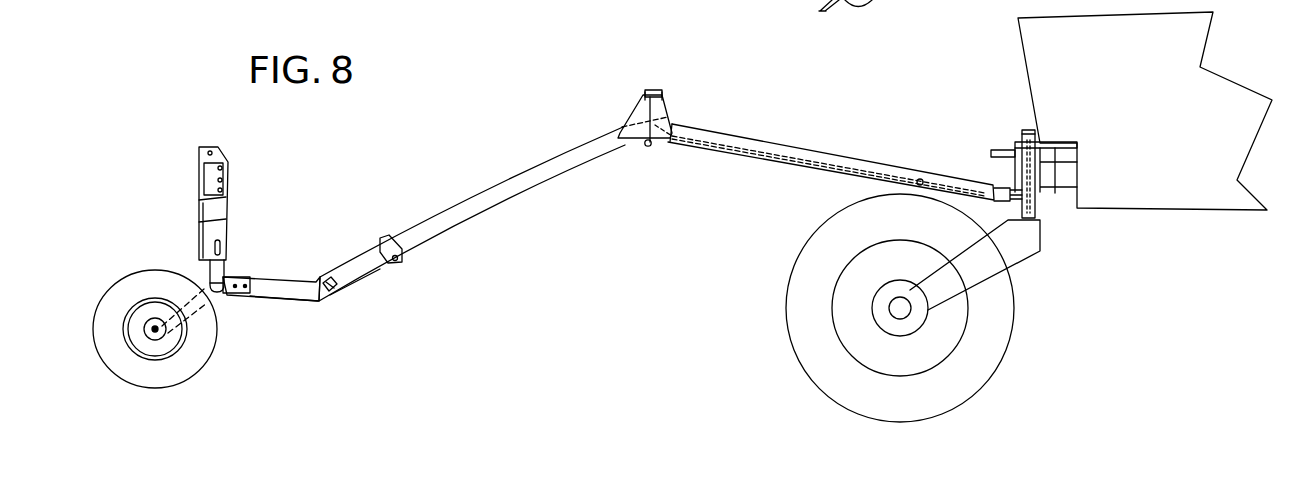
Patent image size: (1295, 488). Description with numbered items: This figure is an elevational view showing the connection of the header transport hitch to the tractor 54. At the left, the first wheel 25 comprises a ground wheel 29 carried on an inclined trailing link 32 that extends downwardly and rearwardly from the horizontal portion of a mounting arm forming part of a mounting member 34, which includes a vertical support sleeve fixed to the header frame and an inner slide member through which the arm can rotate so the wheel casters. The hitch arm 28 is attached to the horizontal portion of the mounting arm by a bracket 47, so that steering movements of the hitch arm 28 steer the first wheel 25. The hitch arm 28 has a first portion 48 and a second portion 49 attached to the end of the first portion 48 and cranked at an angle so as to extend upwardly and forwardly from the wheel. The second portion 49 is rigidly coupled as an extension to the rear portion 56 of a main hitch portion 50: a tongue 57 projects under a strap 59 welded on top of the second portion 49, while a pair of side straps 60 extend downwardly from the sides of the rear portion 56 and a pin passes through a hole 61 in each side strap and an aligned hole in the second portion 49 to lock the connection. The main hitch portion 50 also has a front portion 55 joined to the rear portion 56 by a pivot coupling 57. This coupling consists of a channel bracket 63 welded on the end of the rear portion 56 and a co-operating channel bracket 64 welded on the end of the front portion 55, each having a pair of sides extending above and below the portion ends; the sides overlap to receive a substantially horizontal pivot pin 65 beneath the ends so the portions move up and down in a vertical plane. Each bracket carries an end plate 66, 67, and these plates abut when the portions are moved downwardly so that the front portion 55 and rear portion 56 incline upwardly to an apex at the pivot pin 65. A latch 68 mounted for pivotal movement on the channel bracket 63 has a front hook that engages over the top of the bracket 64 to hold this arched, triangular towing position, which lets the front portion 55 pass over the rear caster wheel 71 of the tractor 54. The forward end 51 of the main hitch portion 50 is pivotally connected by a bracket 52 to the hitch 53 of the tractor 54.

The first wheel 25 is at (132, 242).
The hitch arm 28 is at (281, 280).
The ground wheel 29 is at (198, 363).
The trailing link 32 is at (197, 310).
The mounting member 34 is at (252, 190).
The bracket 47 is at (232, 297).
The first portion 48 is at (302, 303).
The second portion 49 is at (358, 287).
The main hitch portion 50 is at (780, 128).
The forward end 51 is at (993, 185).
The bracket 52 is at (1038, 197).
The hitch 53 is at (1037, 143).
The tractor 54 is at (1027, 77).
The front portion 55 is at (822, 148).
The rear portion 56 is at (503, 183).
The pivot coupling 57 is at (323, 278).
The strap 59 is at (331, 278).
The side straps 60 is at (400, 248).
The hole 61 is at (400, 264).
The channel bracket 63 is at (632, 105).
The channel bracket 64 is at (667, 118).
The pivot pin 65 is at (652, 147).
The end plate 66 is at (643, 92).
The end plate 67 is at (660, 95).
The latch 68 is at (652, 92).
The rear caster wheel 71 is at (803, 320).